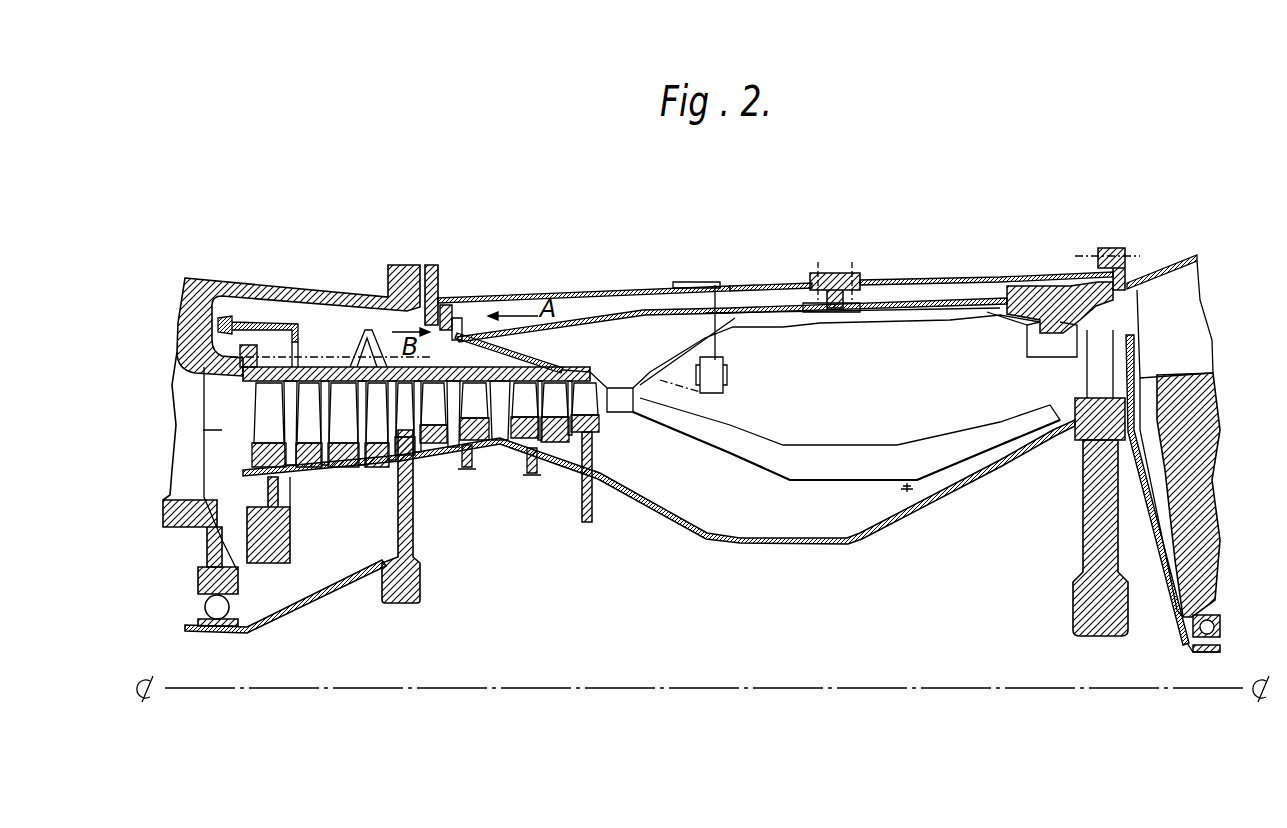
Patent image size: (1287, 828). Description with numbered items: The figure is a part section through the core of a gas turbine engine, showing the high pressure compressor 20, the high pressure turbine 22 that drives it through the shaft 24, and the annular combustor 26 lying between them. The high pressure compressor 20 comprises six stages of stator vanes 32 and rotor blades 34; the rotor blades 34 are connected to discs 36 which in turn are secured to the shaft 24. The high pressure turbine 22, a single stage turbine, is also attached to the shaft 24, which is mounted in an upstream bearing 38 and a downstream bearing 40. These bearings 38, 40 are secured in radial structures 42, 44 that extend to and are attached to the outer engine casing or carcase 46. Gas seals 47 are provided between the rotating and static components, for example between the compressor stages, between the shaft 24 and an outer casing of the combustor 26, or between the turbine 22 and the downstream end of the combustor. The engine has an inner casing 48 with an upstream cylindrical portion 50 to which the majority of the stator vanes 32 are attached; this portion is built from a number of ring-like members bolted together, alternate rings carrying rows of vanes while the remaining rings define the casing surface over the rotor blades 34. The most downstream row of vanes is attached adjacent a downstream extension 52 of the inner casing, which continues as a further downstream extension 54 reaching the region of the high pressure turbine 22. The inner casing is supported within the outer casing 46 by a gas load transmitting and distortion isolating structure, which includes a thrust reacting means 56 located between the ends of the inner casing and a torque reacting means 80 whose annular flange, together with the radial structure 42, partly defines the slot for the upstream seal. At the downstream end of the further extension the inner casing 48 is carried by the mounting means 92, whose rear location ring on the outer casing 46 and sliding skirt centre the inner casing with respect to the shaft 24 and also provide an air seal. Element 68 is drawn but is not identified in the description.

The high pressure compressor 20 is at (508, 512).
The high pressure turbine 22 is at (1056, 470).
The shaft 24 is at (718, 540).
The annular combustor 26 is at (891, 390).
The stator vanes 32 is at (438, 386).
The rotor blades 34 is at (262, 417).
The discs 36 is at (287, 560).
The upstream bearing 38 is at (229, 607).
The downstream bearing 40 is at (1185, 648).
The radial structure 42 is at (197, 470).
The radial structure 44 is at (1215, 440).
The outer engine casing 46 is at (338, 285).
The gas seals 47 is at (1115, 305).
The inner casing 48 is at (585, 298).
The upstream cylindrical portion 50 is at (458, 443).
The downstream extension 52 is at (575, 357).
The further downstream extension 54 is at (930, 305).
The thrust reacting means 56 is at (452, 290).
The diffuser plate 68 is at (527, 358).
The torque reacting means 80 is at (266, 311).
The mounting means 92 is at (1095, 255).